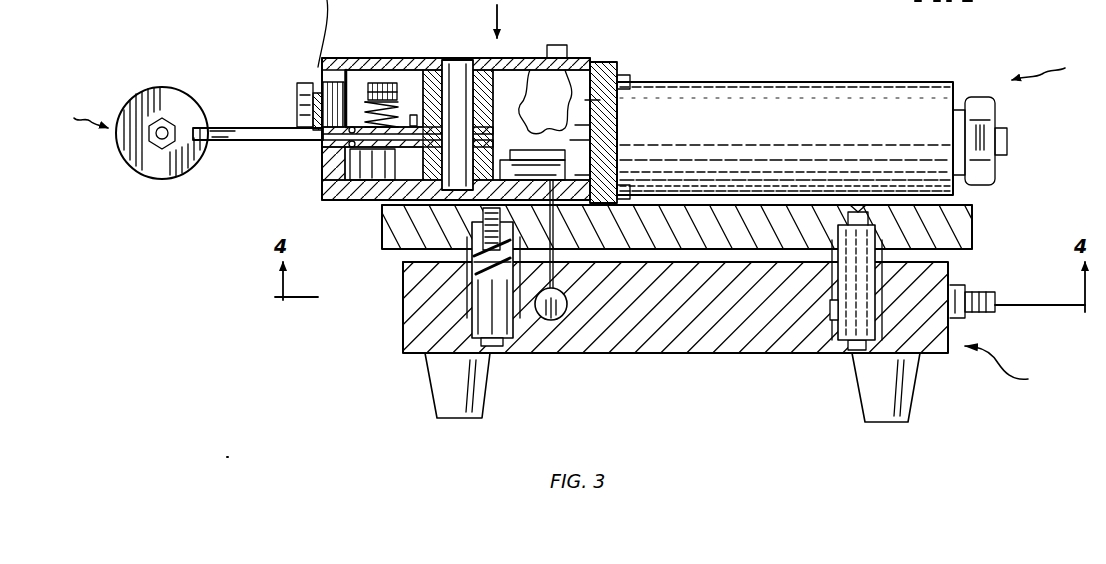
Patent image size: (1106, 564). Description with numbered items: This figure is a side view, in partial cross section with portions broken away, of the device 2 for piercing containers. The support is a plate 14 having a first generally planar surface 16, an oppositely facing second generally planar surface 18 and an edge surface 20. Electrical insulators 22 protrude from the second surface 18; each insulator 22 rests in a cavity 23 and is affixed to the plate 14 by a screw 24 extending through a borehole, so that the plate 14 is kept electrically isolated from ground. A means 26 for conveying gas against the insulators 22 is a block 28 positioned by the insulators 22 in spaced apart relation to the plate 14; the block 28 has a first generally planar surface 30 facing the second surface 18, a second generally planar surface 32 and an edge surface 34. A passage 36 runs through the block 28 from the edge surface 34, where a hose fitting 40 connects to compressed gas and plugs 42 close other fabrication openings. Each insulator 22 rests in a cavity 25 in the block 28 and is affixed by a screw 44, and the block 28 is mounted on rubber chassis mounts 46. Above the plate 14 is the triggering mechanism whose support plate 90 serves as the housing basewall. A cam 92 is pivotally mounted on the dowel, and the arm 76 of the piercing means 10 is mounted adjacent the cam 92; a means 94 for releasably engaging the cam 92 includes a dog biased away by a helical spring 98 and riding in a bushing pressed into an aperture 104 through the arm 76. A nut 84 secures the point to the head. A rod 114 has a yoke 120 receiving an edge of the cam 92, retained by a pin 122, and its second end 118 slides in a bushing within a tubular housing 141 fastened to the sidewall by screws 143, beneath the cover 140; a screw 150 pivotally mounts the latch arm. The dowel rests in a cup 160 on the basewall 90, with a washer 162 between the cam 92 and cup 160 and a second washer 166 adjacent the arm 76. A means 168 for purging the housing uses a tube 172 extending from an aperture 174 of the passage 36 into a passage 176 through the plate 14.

The device 2 is at (1047, 71).
The means for piercing a container 10 is at (76, 118).
The plate 14 is at (973, 228).
The first generally planar surface 16 is at (962, 206).
The second generally planar surface 18 is at (968, 258).
The edge surface 20 is at (380, 232).
The electrical insulator 22 is at (850, 342).
The cavity 23 is at (828, 246).
The screw 24 is at (858, 210).
The cavity 25 is at (832, 318).
The means for conveying a stream of gas 26 is at (1010, 368).
The block 28 is at (960, 290).
The first generally planar surface 30 is at (407, 262).
The second generally planar surface 32 is at (706, 353).
The edge surface 34 is at (403, 322).
The passage 36 is at (526, 342).
The hose fitting 40 is at (992, 295).
The plug 42 is at (966, 316).
The screw 44 is at (496, 352).
The chassis mount 46 is at (432, 388).
The arm 76 is at (243, 127).
The nut 84 is at (148, 160).
The support plate 90 is at (346, 195).
The cam 92 is at (348, 165).
The means for releasably engaging the cam 94 is at (373, 74).
The helical spring 98 is at (388, 82).
The aperture 104 is at (348, 146).
The rod 114 is at (592, 128).
The second end 118 is at (322, 82).
The yoke 120 is at (598, 105).
The pin 122 is at (548, 111).
The cover 140 is at (590, 65).
The tubular housing 141 is at (755, 83).
The screw 143 is at (632, 82).
The screw 150 is at (297, 90).
The cup 160 is at (400, 265).
The washer 162 is at (382, 203).
The second washer 166 is at (546, 70).
The means for purging the housing 168 is at (588, 142).
The tube 172 is at (562, 320).
The aperture 174 is at (575, 396).
The passage 176 is at (590, 190).